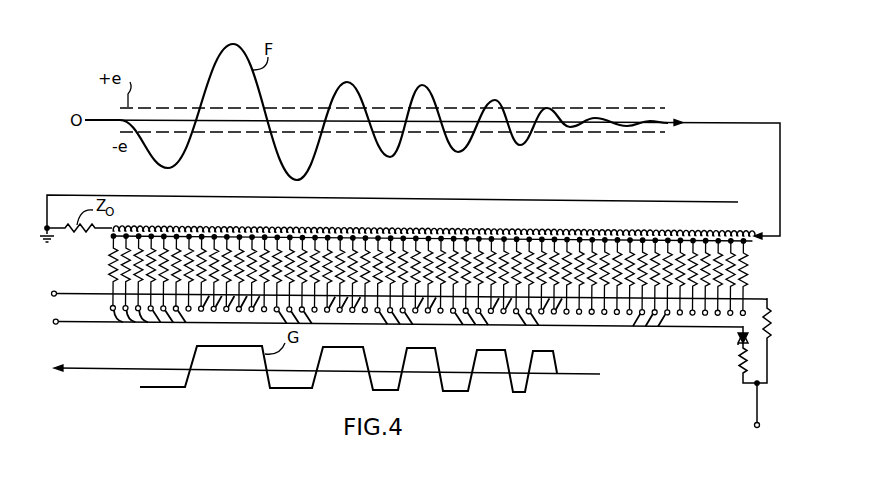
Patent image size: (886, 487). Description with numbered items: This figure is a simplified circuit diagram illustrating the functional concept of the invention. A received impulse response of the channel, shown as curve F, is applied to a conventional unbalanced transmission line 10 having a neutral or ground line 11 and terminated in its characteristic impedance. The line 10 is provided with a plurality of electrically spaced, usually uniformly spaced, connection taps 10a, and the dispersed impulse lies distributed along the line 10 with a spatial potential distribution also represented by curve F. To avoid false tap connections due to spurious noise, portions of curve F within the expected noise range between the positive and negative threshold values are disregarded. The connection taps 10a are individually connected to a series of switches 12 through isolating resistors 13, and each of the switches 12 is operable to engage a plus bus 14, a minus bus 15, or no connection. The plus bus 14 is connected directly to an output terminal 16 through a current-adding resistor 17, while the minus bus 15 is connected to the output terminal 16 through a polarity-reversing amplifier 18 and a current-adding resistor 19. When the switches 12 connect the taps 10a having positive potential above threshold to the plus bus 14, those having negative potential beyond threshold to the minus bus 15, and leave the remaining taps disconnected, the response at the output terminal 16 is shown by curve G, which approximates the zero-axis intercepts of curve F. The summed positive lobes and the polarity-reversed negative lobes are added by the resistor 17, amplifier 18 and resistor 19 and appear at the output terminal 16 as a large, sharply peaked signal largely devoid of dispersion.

The unbalanced transmission line 10 is at (436, 231).
The connection taps 10a is at (138, 236).
The neutral or ground line 11 is at (497, 197).
The switches 12 is at (137, 312).
The isolating resistors 13 is at (110, 283).
The plus bus 14 is at (51, 293).
The minus bus 15 is at (53, 321).
The output terminal 16 is at (754, 427).
The current-adding resistor 17 is at (771, 331).
The polarity-reversing amplifier 18 is at (737, 343).
The current-adding resistor 19 is at (738, 368).